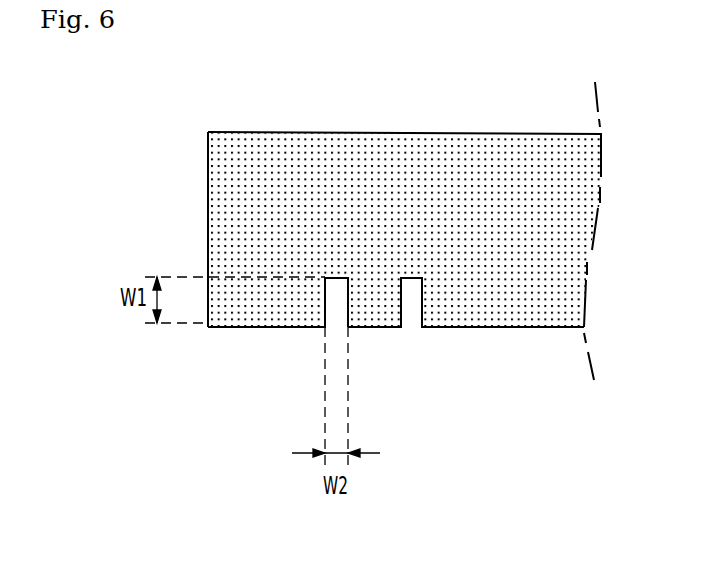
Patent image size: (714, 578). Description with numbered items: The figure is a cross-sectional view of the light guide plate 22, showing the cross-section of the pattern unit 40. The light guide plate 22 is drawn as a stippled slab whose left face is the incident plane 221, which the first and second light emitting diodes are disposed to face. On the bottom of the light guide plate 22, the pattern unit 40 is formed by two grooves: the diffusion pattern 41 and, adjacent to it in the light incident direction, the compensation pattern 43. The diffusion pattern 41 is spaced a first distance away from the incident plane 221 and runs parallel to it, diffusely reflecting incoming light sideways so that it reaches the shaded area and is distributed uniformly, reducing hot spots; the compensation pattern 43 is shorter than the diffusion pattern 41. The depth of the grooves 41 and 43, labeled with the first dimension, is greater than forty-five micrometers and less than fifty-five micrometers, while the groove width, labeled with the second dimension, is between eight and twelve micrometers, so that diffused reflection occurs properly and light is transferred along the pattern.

The light guide plate 22 is at (405, 132).
The incident plane 221 is at (208, 190).
The pattern unit 40 is at (396, 359).
The diffusion pattern 41 is at (337, 312).
The compensation pattern 43 is at (413, 312).